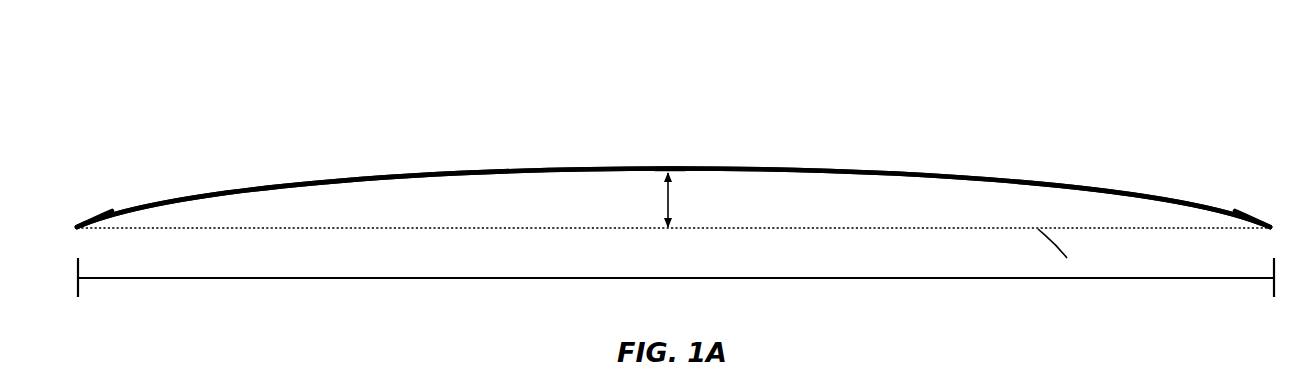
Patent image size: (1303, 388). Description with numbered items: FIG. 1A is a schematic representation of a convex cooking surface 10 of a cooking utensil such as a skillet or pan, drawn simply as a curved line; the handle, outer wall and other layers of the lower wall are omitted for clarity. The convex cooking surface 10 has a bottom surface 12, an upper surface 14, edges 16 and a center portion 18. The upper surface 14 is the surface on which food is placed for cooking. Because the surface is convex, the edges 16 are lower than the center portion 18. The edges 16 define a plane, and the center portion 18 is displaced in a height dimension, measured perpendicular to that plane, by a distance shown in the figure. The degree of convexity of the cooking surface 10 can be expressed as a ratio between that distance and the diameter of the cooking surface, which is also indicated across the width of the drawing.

The convex cooking surface 10 is at (208, 117).
The bottom surface 12 is at (925, 176).
The upper surface 14 is at (340, 177).
The edges 16 is at (79, 226).
The center portion 18 is at (670, 167).